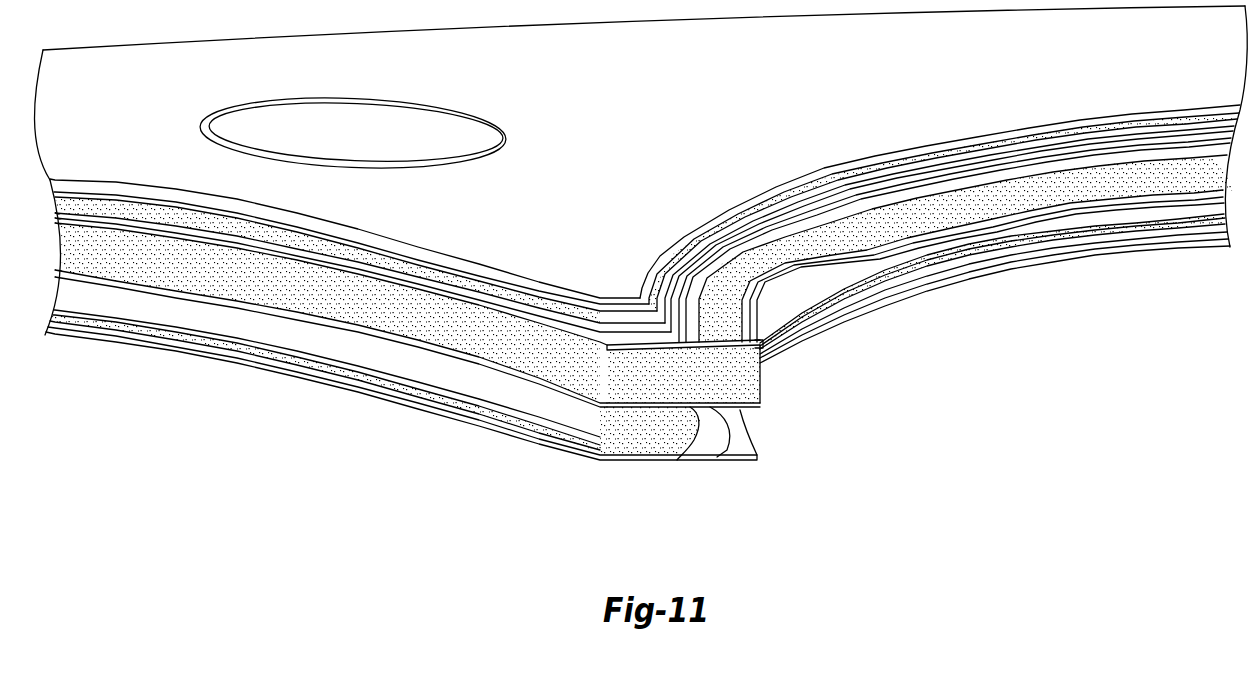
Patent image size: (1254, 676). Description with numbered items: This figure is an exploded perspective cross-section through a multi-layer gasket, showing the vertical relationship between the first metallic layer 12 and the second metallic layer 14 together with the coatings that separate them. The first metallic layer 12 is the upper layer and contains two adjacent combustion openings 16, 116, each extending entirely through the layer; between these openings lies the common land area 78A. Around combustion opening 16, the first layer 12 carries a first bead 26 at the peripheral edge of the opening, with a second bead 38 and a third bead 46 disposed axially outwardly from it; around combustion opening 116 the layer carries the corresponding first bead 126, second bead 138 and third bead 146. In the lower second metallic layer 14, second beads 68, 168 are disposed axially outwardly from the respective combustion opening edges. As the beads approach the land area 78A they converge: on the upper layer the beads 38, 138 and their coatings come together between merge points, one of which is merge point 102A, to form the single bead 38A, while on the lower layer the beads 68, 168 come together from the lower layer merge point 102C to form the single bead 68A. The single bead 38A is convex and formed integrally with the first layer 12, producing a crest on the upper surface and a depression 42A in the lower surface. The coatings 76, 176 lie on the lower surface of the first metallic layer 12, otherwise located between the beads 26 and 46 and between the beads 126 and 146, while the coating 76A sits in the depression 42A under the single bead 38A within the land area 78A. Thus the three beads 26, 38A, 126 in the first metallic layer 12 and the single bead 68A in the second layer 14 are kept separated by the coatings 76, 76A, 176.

The combustion opening 16 is at (278, 505).
The combustion opening 116 is at (1059, 425).
The second metallic layer 14 is at (540, 430).
The first metallic layer 12 is at (750, 301).
The first bead 26 is at (618, 353).
The second bead 38 is at (430, 262).
The single bead 38A is at (740, 350).
The depression 42A is at (687, 350).
The third bead 46 is at (363, 233).
The second bead 68 is at (183, 330).
The single bead 68A is at (672, 452).
The coating 76 is at (293, 303).
The coating 76A is at (747, 390).
The land area 78A is at (611, 186).
The merge point 102A is at (627, 297).
The lower layer merge point 102C is at (570, 403).
The first bead 126 is at (762, 351).
The second bead 138 is at (852, 172).
The third bead 146 is at (920, 148).
The second bead 168 is at (953, 257).
The coating 176 is at (1080, 193).